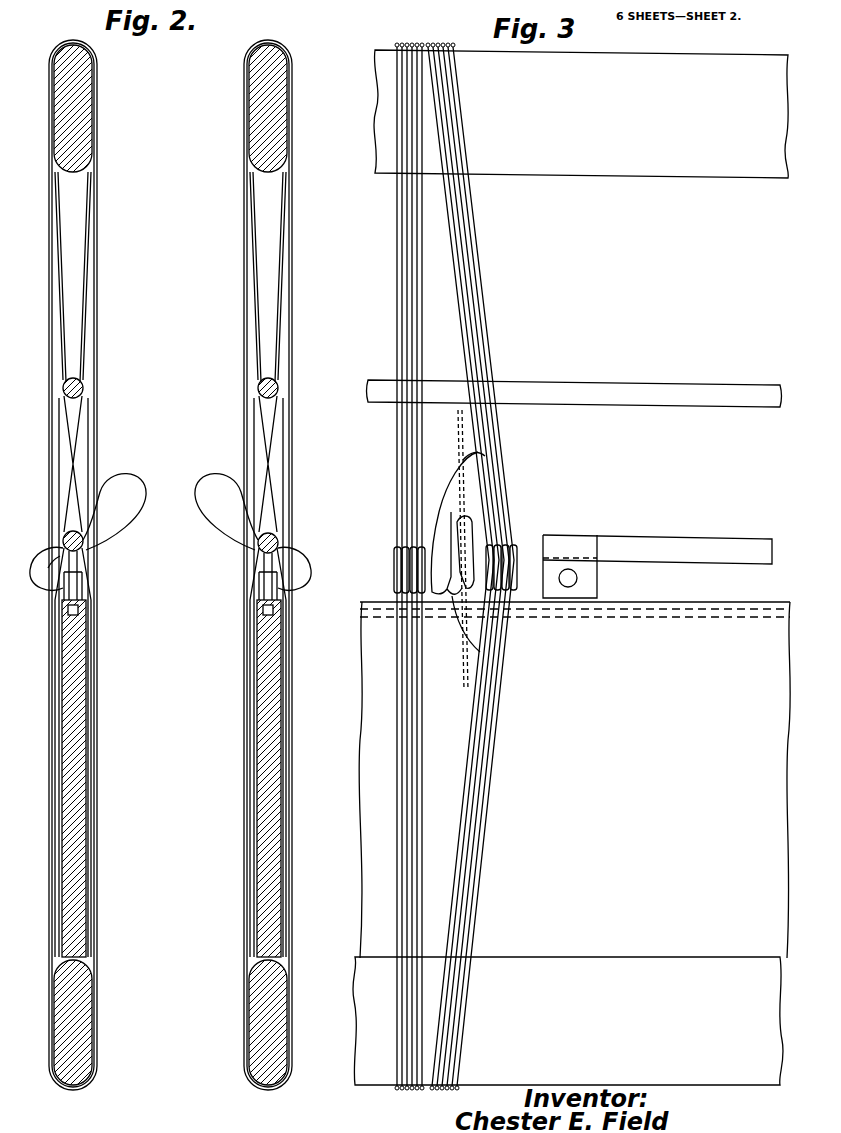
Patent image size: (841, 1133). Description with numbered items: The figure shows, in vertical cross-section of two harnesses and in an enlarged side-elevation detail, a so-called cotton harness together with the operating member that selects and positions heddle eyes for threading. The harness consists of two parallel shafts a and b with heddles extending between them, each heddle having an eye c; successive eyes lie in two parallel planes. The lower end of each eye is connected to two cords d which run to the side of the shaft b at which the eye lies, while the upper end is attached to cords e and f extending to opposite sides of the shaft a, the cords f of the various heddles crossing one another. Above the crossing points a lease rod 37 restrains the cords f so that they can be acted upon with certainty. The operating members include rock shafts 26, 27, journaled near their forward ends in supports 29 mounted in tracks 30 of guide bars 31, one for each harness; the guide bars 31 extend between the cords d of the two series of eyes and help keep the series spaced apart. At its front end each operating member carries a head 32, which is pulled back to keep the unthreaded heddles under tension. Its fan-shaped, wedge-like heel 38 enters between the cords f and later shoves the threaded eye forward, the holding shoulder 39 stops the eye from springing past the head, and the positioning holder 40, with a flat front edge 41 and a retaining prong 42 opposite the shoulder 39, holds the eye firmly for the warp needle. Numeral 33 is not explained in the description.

In FIG. 2, the shaft a is at (75, 113).
In FIG. 3, the shaft a is at (608, 62).
In FIG. 2, the shaft b is at (75, 1018).
In FIG. 3, the shaft b is at (562, 968).
In FIG. 2, the eye c is at (256, 572).
In FIG. 3, the eye c is at (395, 562).
In FIG. 2, the cords d is at (56, 688).
In FIG. 3, the cords d is at (412, 744).
In FIG. 2, the cord e is at (243, 432).
In FIG. 2, the cord f is at (274, 424).
In FIG. 2, the rock shaft 26 is at (278, 543).
In FIG. 2, the rock shaft 27 is at (82, 540).
In FIG. 3, the rock shaft 27 is at (668, 548).
In FIG. 2, the support 29 is at (78, 582).
In FIG. 3, the support 29 is at (584, 548).
In FIG. 2, the track 30 is at (85, 612).
In FIG. 2, the guide bar 31 is at (75, 697).
In FIG. 3, the guide bar 31 is at (650, 636).
In FIG. 3, the head 32 is at (462, 486).
In FIG. 2, the heddle bar portion 33 is at (97, 863).
In FIG. 2, the lease rod 37 is at (83, 388).
In FIG. 3, the lease rod 37 is at (606, 392).
In FIG. 2, the fan-shaped heel 38 is at (122, 478).
In FIG. 3, the fan-shaped heel 38 is at (490, 470).
In FIG. 2, the holding shoulder 39 is at (36, 548).
In FIG. 3, the holding shoulder 39 is at (440, 590).
In FIG. 3, the positioning holder 40 is at (486, 545).
In FIG. 3, the flat front edge 41 is at (458, 596).
In FIG. 2, the retaining prong 42 is at (52, 562).
In FIG. 3, the retaining prong 42 is at (480, 652).